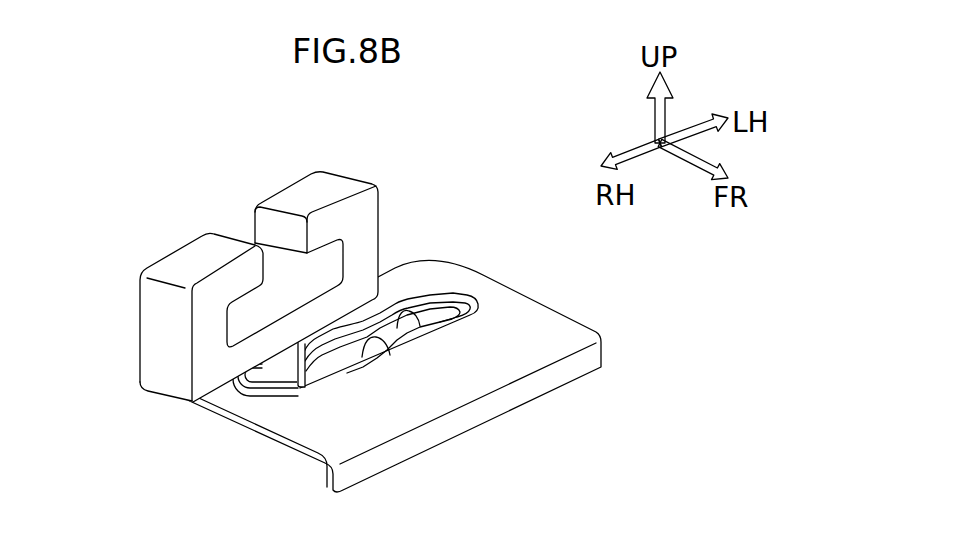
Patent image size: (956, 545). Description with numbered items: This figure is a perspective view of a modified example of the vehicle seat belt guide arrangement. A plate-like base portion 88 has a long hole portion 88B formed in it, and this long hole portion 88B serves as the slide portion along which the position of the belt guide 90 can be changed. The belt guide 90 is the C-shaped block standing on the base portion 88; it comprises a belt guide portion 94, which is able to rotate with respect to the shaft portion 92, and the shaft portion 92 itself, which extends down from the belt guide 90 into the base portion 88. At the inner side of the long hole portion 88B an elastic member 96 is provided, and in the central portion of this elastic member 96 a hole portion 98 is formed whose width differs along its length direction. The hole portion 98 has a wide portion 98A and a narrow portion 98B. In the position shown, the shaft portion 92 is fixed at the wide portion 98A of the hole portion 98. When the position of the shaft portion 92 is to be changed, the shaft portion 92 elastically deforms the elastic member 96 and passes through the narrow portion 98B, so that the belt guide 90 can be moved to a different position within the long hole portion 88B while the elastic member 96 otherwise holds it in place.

The base portion 88 is at (396, 380).
The long hole portion 88B is at (473, 303).
The belt guide 90 is at (271, 298).
The shaft portion 92 is at (282, 377).
The belt guide portion 94 is at (163, 365).
The elastic member 96 is at (336, 374).
The hole portion 98 is at (431, 404).
The wide portion 98A is at (386, 350).
The narrow portion 98B is at (415, 320).